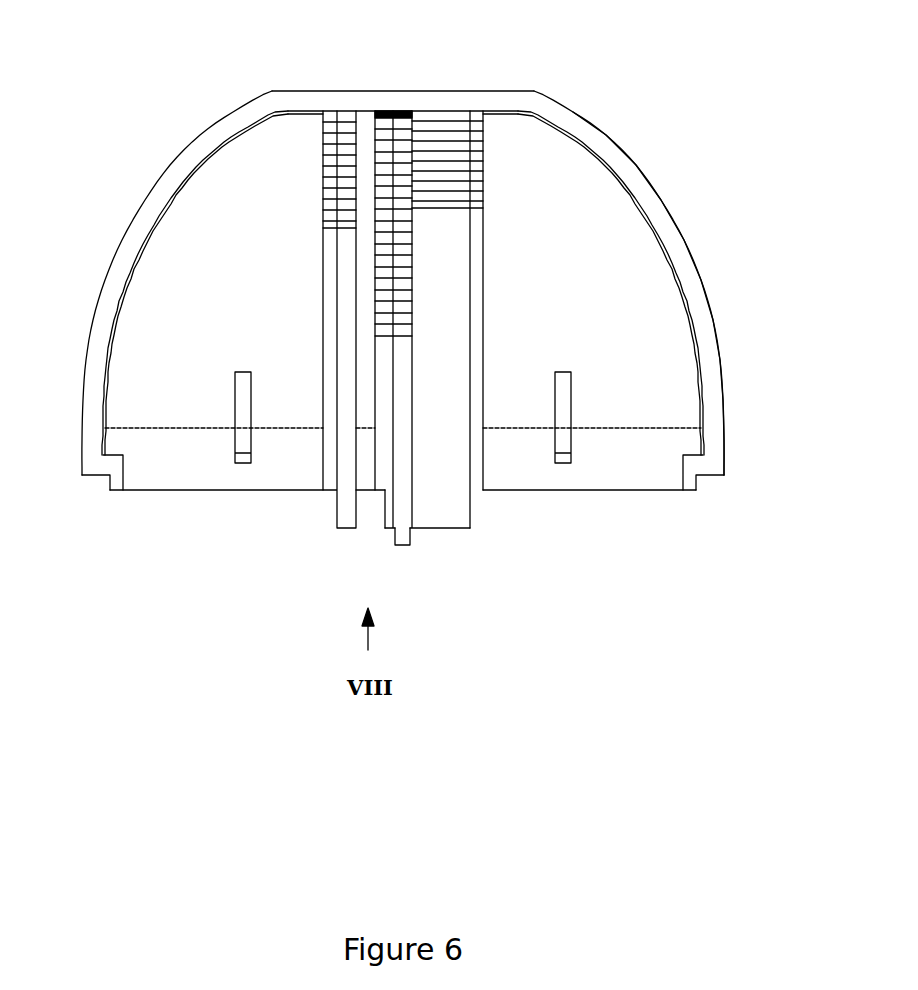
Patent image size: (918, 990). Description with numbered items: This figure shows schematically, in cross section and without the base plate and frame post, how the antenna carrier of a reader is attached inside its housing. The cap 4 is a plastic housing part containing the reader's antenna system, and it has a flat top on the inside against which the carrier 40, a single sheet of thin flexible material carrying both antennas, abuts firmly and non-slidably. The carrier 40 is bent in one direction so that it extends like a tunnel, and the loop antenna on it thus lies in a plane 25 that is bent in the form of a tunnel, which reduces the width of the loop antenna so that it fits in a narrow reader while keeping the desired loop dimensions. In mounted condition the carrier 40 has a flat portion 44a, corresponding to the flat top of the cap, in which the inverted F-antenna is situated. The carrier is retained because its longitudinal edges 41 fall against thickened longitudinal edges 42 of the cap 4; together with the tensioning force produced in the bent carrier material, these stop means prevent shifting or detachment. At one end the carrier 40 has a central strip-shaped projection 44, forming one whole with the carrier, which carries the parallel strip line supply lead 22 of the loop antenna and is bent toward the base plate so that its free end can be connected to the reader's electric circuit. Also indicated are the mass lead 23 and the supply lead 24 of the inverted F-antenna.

The cap 4 is at (215, 137).
The carrier 40 is at (608, 165).
The flat portion 44a is at (500, 112).
The plane 25 is at (152, 217).
The longitudinal edges of the carrier 41 is at (103, 448).
The thickened longitudinal edges of the cap 42 is at (113, 462).
The supply lead 24 is at (342, 512).
The central strip-shaped projection 44 is at (400, 541).
The mass lead 23 is at (447, 498).
The supply lead 22 is at (399, 522).